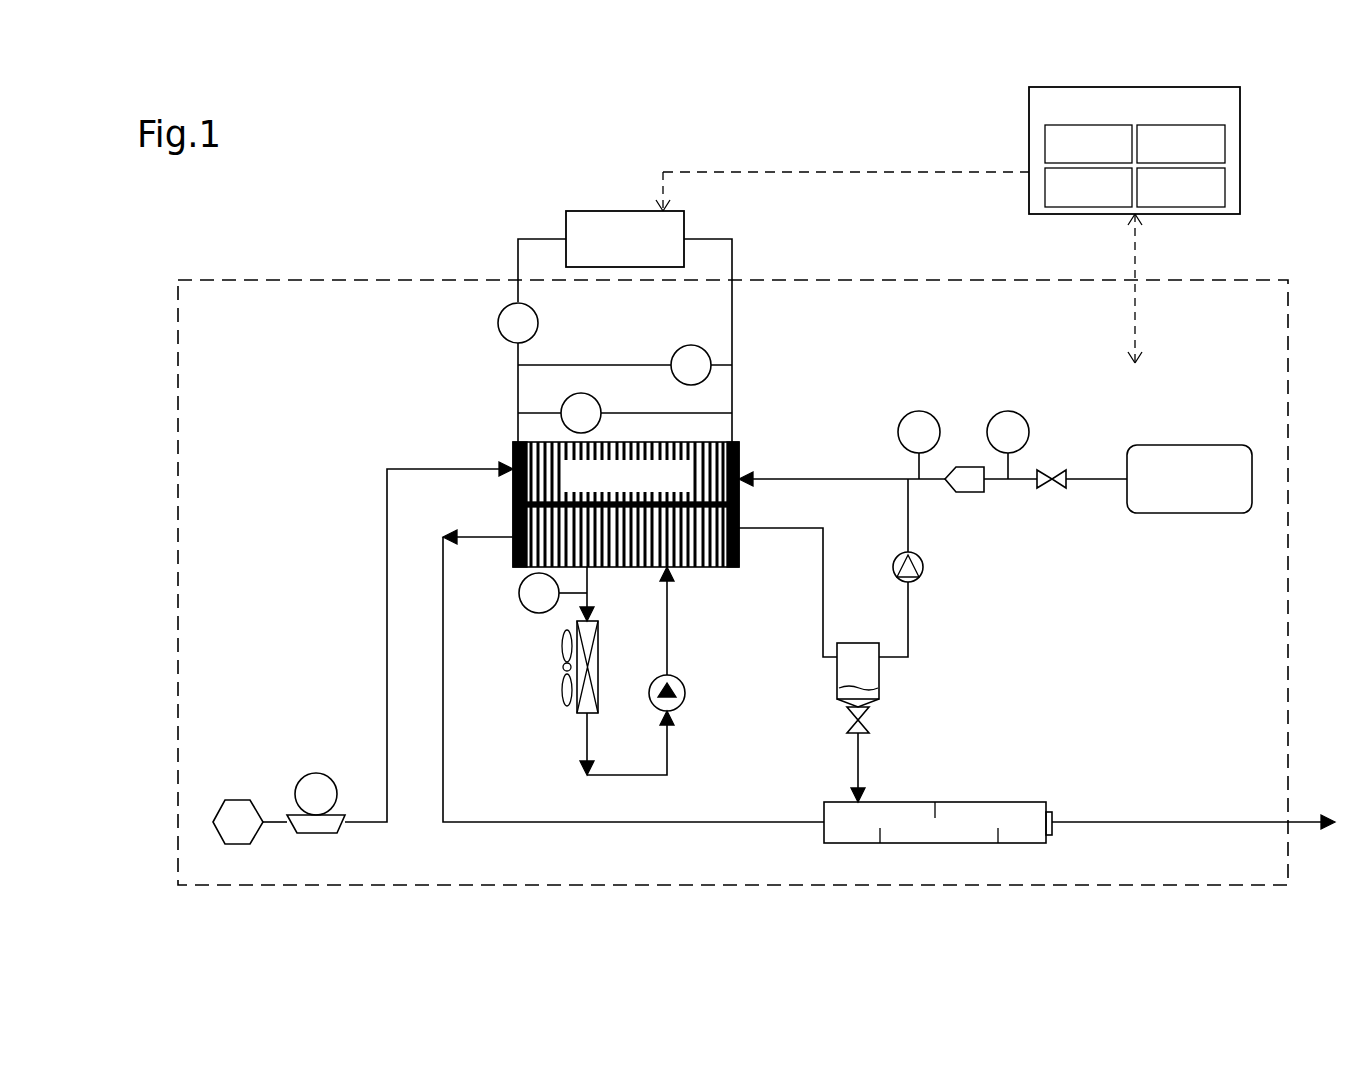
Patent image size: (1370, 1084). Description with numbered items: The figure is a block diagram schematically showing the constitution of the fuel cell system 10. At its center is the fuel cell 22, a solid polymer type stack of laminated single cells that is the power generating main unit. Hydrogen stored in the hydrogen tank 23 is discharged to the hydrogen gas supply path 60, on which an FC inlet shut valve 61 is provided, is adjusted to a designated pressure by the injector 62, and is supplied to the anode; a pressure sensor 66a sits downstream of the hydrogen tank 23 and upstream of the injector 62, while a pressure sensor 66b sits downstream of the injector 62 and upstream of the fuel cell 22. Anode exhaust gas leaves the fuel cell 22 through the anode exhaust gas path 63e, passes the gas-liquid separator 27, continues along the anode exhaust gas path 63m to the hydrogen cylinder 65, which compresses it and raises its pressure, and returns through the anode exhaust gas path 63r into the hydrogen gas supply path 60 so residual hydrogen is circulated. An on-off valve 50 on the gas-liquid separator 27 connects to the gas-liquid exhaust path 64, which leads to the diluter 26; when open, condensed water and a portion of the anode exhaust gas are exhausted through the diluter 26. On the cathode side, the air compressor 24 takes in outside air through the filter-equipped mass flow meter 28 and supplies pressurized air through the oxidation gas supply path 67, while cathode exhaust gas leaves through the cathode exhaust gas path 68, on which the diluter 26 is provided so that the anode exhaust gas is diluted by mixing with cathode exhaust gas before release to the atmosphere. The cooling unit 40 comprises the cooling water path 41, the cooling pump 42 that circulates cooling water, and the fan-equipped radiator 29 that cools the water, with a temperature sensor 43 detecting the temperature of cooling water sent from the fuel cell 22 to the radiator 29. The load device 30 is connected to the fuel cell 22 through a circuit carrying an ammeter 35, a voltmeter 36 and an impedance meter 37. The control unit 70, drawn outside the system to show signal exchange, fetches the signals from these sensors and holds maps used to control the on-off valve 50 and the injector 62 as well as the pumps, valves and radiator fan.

The fuel cell system 10 is at (283, 278).
The fuel cell 22 is at (741, 442).
The hydrogen tank 23 is at (1216, 513).
The air compressor 24 is at (318, 773).
The diluter 26 is at (976, 802).
The gas-liquid separator 27 is at (858, 643).
The mass flow meter 28 is at (238, 800).
The radiator 29 is at (598, 640).
The load device 30 is at (578, 211).
The ammeter 35 is at (498, 329).
The voltmeter 36 is at (676, 379).
The impedance meter 37 is at (564, 400).
The cooling unit 40 is at (726, 662).
The cooling water path 41 is at (668, 633).
The cooling pump 42 is at (685, 693).
The temperature sensor 43 is at (519, 592).
The on-off valve 50 is at (847, 723).
The hydrogen gas supply path 60 is at (858, 478).
The FC inlet shut valve 61 is at (1049, 470).
The injector 62 is at (963, 467).
The anode exhaust gas path 63e is at (823, 569).
The anode exhaust gas path 63m is at (908, 626).
The anode exhaust gas path 63r is at (908, 515).
The gas-liquid exhaust path 64 is at (856, 772).
The hydrogen cylinder 65 is at (923, 567).
The pressure sensor 66a is at (1005, 411).
The pressure sensor 66b is at (917, 411).
The oxidation gas supply path 67 is at (387, 520).
The cathode exhaust gas path 68 is at (443, 722).
The control unit 70 is at (1240, 108).